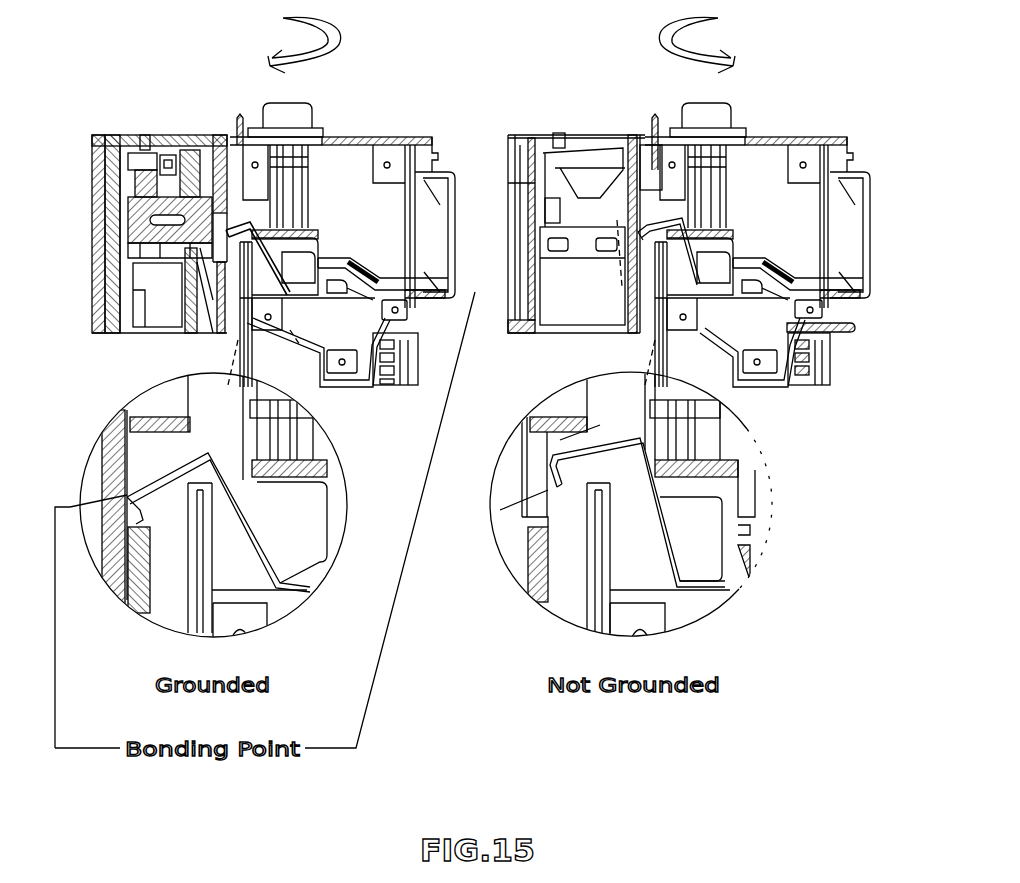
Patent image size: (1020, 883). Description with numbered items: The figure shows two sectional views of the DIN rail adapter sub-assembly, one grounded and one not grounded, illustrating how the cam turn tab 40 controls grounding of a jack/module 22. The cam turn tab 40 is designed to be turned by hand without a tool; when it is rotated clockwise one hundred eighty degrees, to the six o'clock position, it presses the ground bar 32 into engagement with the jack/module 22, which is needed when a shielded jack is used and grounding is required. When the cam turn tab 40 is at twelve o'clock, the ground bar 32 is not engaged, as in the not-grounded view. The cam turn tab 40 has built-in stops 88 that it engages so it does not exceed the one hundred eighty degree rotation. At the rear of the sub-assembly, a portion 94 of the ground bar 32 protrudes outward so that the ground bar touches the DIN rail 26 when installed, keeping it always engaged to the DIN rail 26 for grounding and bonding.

The jack/module 22 is at (180, 157).
The stops 88 is at (246, 140).
The cam turn tab 40 is at (313, 103).
The DIN rail 26 is at (866, 172).
The portion of the ground bar 94 is at (856, 292).
The grounding bar 32 is at (160, 470).